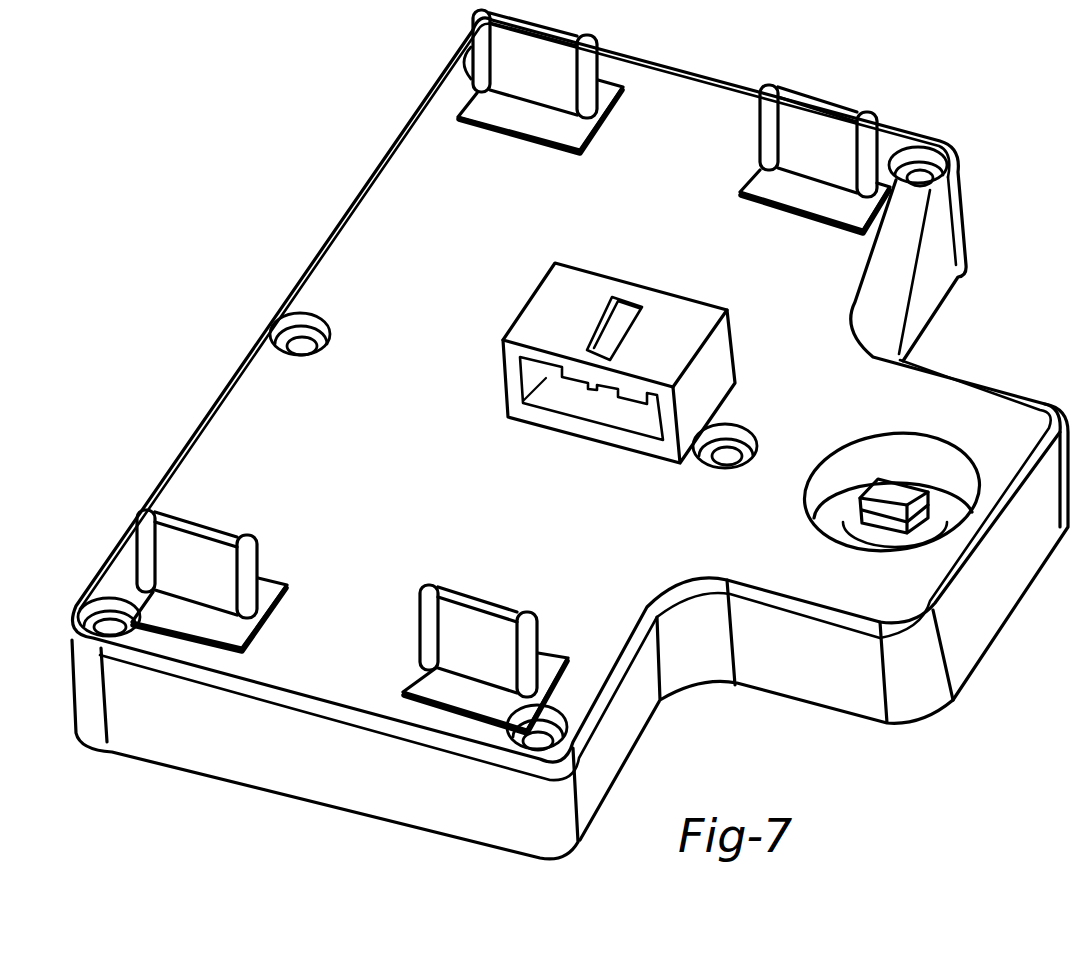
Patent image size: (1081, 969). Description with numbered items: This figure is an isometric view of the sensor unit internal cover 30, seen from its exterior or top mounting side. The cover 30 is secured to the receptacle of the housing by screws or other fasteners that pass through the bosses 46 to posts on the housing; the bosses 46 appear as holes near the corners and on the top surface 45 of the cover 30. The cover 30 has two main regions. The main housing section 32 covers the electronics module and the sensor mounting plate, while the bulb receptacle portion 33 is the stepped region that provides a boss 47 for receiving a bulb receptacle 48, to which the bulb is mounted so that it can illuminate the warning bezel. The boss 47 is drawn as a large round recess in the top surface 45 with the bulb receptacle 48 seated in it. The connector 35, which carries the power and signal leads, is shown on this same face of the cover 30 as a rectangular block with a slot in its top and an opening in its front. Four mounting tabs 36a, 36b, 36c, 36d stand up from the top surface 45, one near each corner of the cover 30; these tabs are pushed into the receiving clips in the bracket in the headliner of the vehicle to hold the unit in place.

The cover 30 is at (205, 780).
The main housing section 32 is at (390, 793).
The bulb receptacle portion 33 is at (823, 677).
The connector 35 is at (584, 324).
The mounting tab 36a is at (210, 585).
The mounting tab 36b is at (553, 87).
The mounting tab 36c is at (497, 659).
The mounting tab 36d is at (833, 157).
The top surface 45 is at (412, 475).
The boss 46 is at (323, 334).
The boss 47 is at (832, 472).
The bulb receptacle 48 is at (890, 495).